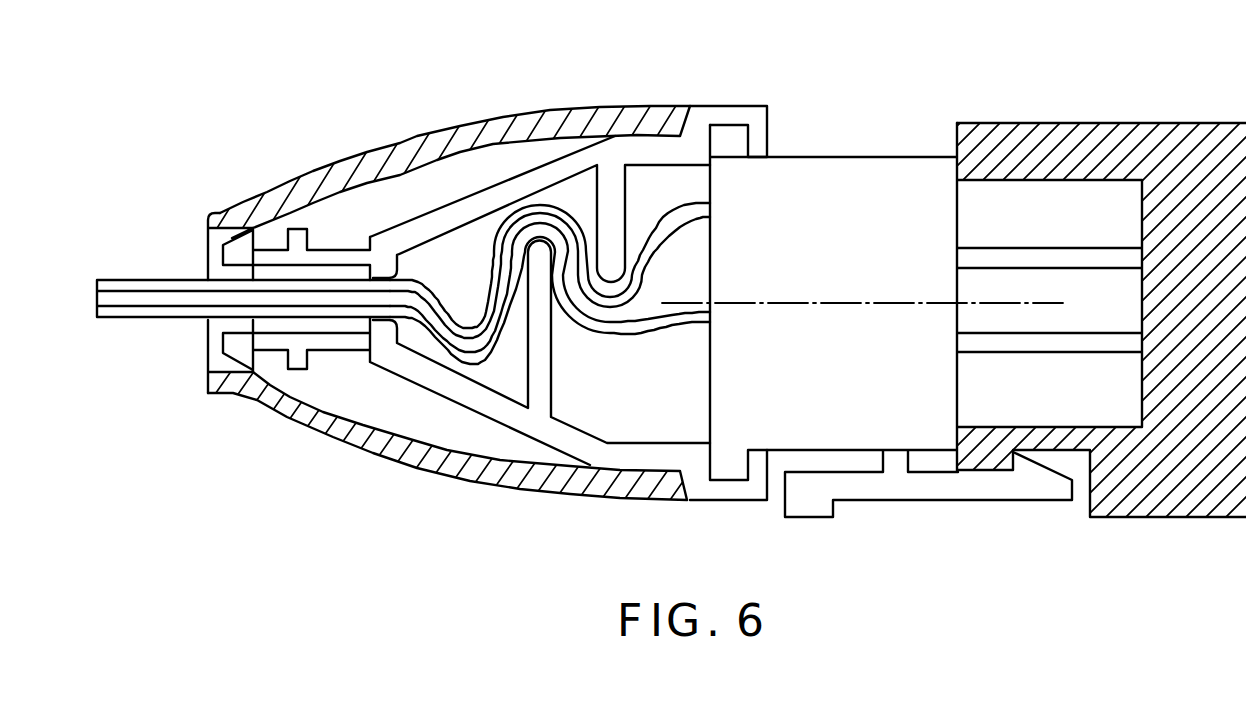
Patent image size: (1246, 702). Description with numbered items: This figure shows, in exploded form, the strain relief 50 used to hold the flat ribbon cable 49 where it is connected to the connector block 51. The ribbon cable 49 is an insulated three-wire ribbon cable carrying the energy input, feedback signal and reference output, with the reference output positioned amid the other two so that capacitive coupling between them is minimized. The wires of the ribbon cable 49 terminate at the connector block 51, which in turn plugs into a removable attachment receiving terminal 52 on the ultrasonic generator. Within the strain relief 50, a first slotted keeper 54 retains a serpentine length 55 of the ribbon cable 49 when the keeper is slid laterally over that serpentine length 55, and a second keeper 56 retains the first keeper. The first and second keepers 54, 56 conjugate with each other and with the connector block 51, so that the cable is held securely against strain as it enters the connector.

The flat ribbon cable 49 is at (180, 280).
The strain relief 50 is at (638, 86).
The connector block 51 is at (862, 167).
The receiving terminal 52 is at (1220, 505).
The first slotted keeper 54 is at (765, 122).
The serpentine length 55 is at (495, 347).
The second keeper 56 is at (320, 433).